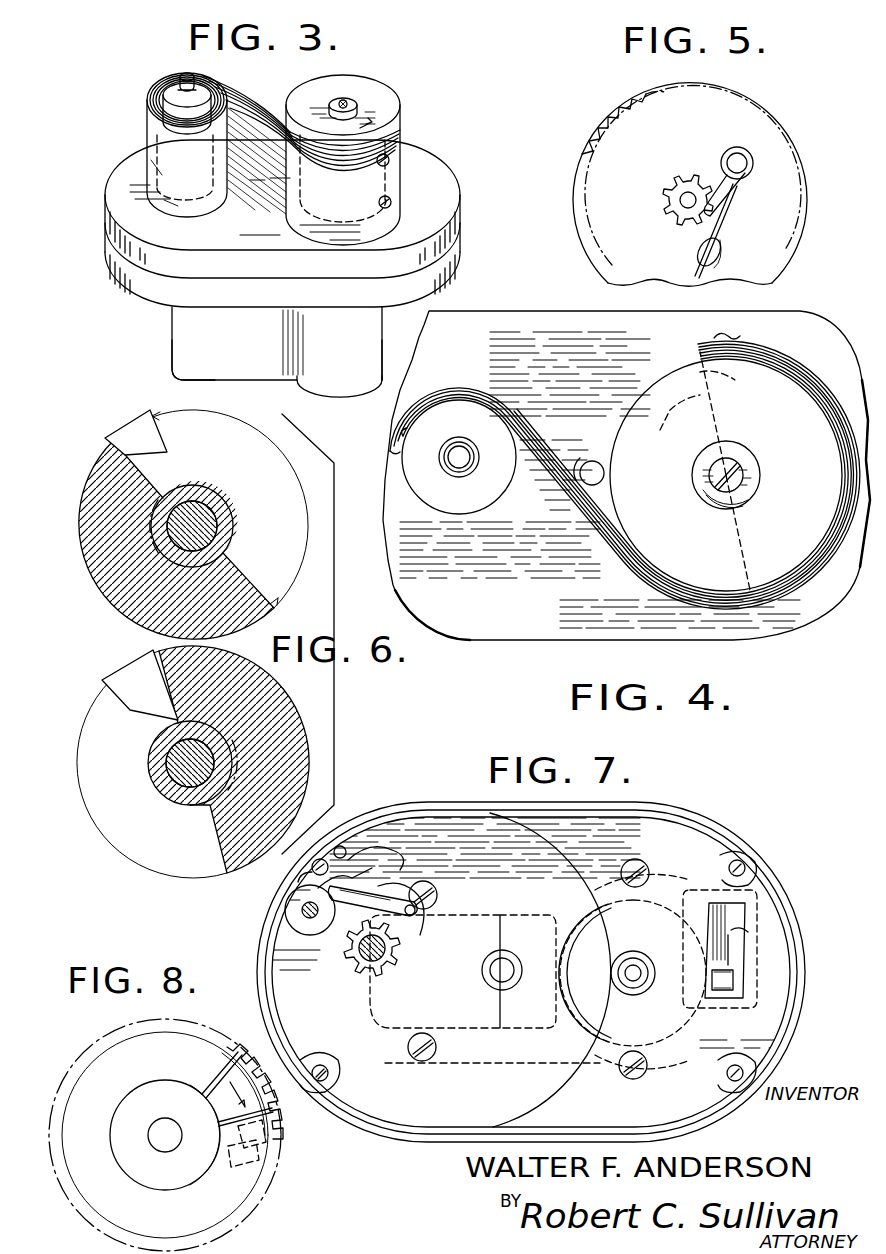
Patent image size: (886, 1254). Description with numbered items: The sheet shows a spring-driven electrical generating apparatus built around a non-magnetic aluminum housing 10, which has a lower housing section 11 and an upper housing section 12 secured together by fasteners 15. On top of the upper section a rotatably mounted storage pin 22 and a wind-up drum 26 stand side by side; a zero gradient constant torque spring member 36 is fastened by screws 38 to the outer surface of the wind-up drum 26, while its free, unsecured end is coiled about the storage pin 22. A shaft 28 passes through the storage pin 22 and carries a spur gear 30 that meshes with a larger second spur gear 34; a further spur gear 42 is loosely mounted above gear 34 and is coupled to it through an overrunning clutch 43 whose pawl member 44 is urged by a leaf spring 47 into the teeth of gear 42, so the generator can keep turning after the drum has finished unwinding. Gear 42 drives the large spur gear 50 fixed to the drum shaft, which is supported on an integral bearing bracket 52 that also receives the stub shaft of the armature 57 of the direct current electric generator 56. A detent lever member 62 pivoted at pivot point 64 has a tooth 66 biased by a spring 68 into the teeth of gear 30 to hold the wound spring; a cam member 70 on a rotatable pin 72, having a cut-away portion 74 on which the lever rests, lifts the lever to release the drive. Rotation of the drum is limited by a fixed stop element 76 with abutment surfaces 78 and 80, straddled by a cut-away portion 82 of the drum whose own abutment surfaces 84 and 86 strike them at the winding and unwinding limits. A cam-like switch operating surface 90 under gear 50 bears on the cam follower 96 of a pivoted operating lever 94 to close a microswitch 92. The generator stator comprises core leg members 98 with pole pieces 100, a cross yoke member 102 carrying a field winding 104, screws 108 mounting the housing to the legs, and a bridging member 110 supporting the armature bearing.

In FIG. 3, the housing 10 is at (261, 231).
In FIG. 3, the lower housing section 11 is at (132, 290).
In FIG. 3, the upper housing section 12 is at (122, 188).
In FIG. 7, the fasteners 15 is at (320, 1082).
In FIG. 3, the storage pin 22 is at (202, 132).
In FIG. 4, the storage pin 22 is at (459, 483).
In FIG. 3, the wind-up drum 26 is at (363, 160).
In FIG. 4, the wind-up drum 26 is at (738, 456).
In FIG. 3, the shaft 28 is at (183, 76).
In FIG. 4, the shaft 28 is at (459, 457).
In FIG. 7, the spur gear 30 is at (368, 977).
In FIG. 5, the second spur gear 34 is at (585, 156).
In FIG. 3, the spring member 36 is at (259, 103).
In FIG. 4, the spring member 36 is at (583, 522).
In FIG. 3, the screws 38 is at (389, 202).
In FIG. 4, the screws 38 is at (739, 340).
In FIG. 5, the spur gear 42 is at (668, 188).
In FIG. 5, the overrunning clutch 43 is at (747, 188).
In FIG. 5, the pawl member 44 is at (720, 173).
In FIG. 5, the leaf spring 47 is at (733, 222).
In FIG. 8, the large spur gear 50 is at (265, 1193).
In FIG. 7, the bearing bracket 52 is at (628, 1007).
In FIG. 3, the direct current electric generator 56 is at (276, 357).
In FIG. 7, the direct current electric generator 56 is at (545, 1063).
In FIG. 7, the armature 57 is at (690, 1018).
In FIG. 7, the lever member 62 is at (352, 920).
In FIG. 7, the pivot point 64 is at (410, 938).
In FIG. 7, the tooth 66 is at (395, 922).
In FIG. 7, the spring 68 is at (365, 880).
In FIG. 7, the cam member 70 is at (308, 935).
In FIG. 7, the rotatable pin 72 is at (330, 893).
In FIG. 7, the cut-away portion 74 is at (293, 917).
In FIG. 4, the stop element 76 is at (671, 357).
In FIG. 6, the stop element 76 is at (157, 437).
In FIG. 4, the abutment surface 78 is at (702, 393).
In FIG. 6, the abutment surface 78 is at (160, 430).
In FIG. 4, the abutment surface 80 is at (657, 400).
In FIG. 6, the abutment surface 80 is at (117, 440).
In FIG. 6, the cut-away portion 82 is at (117, 850).
In FIG. 4, the abutment surface 84 is at (708, 372).
In FIG. 6, the abutment surface 84 is at (256, 595).
In FIG. 4, the abutment surface 86 is at (742, 563).
In FIG. 6, the abutment surface 86 is at (112, 452).
In FIG. 8, the cam-like switch operating surface 90 is at (228, 1102).
In FIG. 7, the microswitch 92 is at (774, 950).
In FIG. 7, the pivoted operating lever 94 is at (727, 938).
In FIG. 8, the pivoted operating lever 94 is at (252, 1140).
In FIG. 7, the cam follower 96 is at (718, 980).
In FIG. 8, the cam follower 96 is at (243, 1167).
In FIG. 3, the core leg members 98 is at (203, 368).
In FIG. 7, the core leg members 98 is at (500, 893).
In FIG. 3, the pole piece 100 is at (372, 367).
In FIG. 7, the pole piece 100 is at (665, 875).
In FIG. 7, the cross yoke member 102 is at (435, 1005).
In FIG. 7, the field winding 104 is at (370, 1008).
In FIG. 7, the screws 108 is at (432, 885).
In FIG. 3, the bridging member 110 is at (342, 397).